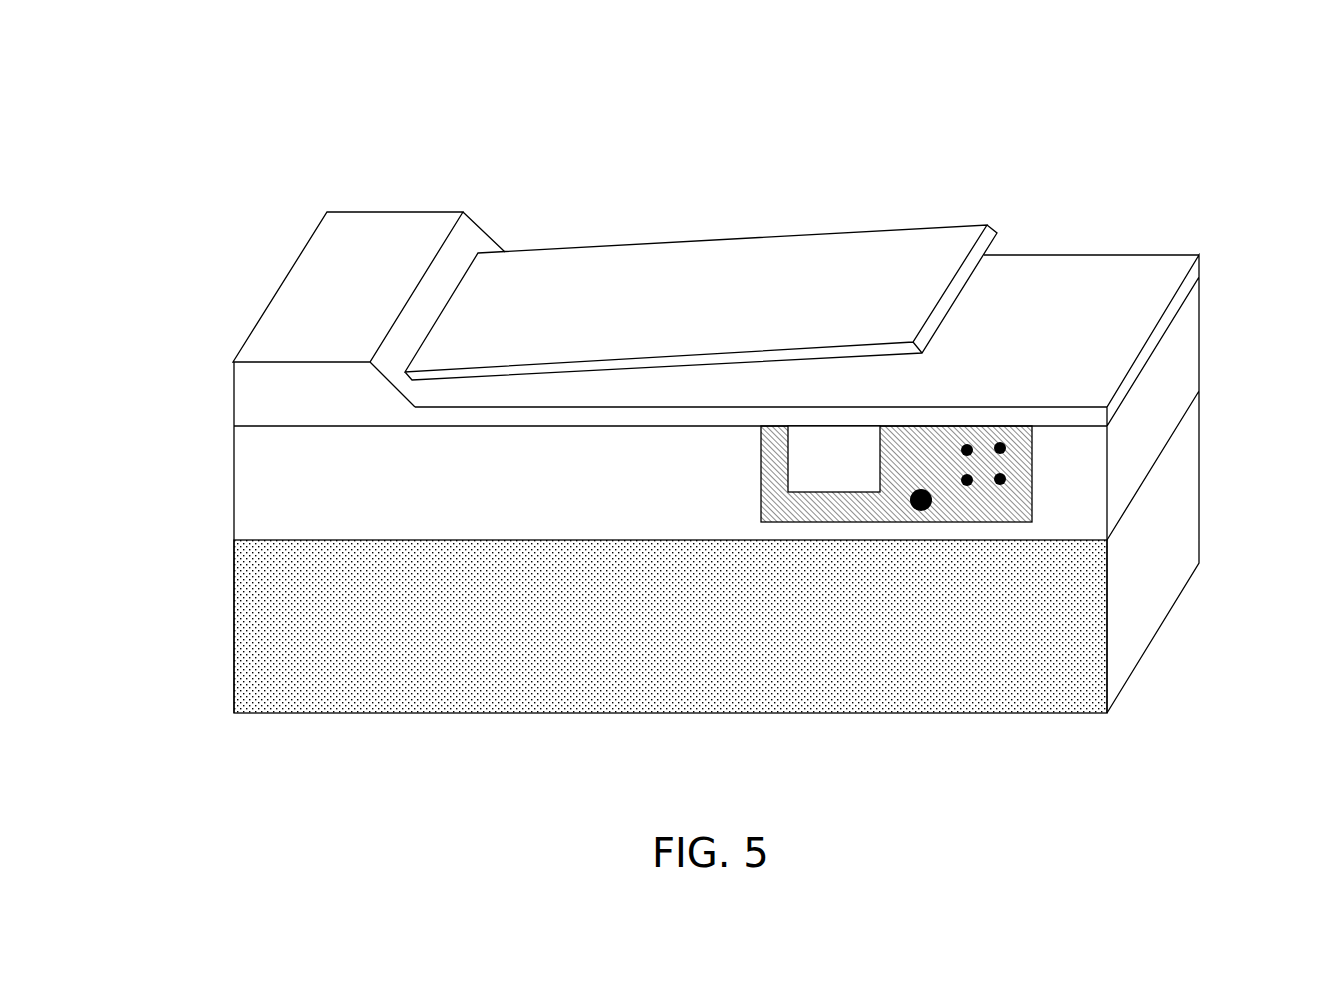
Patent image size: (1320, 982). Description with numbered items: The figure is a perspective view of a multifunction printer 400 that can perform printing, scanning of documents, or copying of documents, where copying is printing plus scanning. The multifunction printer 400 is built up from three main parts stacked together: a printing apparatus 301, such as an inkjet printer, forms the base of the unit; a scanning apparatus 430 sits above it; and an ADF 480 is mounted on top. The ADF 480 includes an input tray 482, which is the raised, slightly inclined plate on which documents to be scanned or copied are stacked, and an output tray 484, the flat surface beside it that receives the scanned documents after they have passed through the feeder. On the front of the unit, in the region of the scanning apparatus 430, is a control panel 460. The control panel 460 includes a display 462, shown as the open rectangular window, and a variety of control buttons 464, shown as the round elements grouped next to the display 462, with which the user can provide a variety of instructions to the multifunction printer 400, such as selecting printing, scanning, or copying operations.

The multifunction printer 400 is at (696, 389).
The printing apparatus 301 is at (233, 684).
The scanning apparatus 430 is at (205, 413).
The control panel 460 is at (775, 487).
The display 462 is at (798, 462).
The control buttons 464 is at (1008, 447).
The ADF 480 is at (338, 255).
The input tray 482 is at (842, 250).
The output tray 484 is at (995, 287).